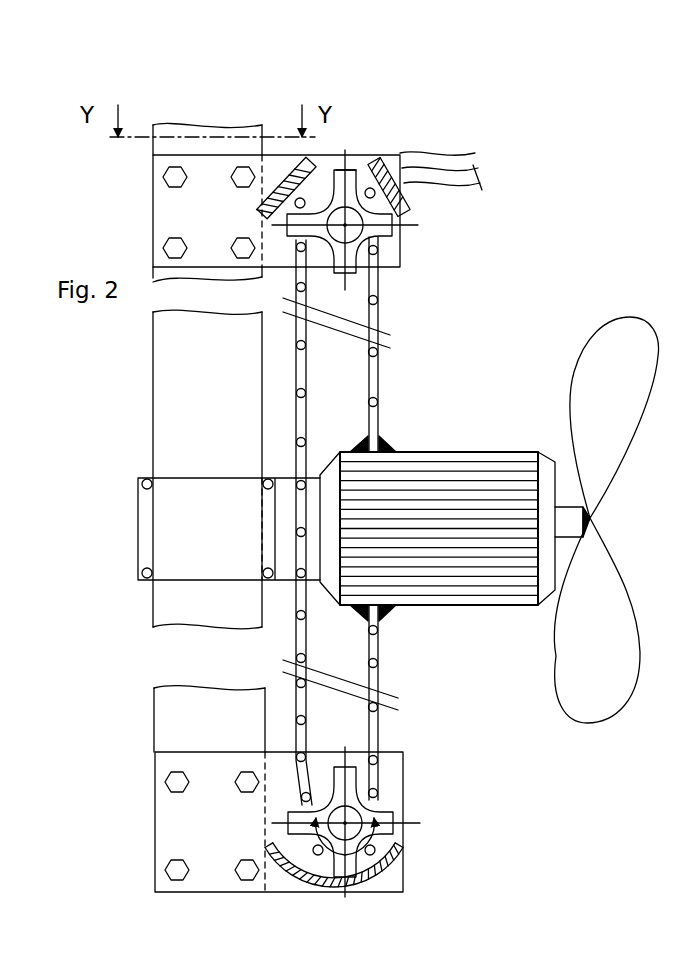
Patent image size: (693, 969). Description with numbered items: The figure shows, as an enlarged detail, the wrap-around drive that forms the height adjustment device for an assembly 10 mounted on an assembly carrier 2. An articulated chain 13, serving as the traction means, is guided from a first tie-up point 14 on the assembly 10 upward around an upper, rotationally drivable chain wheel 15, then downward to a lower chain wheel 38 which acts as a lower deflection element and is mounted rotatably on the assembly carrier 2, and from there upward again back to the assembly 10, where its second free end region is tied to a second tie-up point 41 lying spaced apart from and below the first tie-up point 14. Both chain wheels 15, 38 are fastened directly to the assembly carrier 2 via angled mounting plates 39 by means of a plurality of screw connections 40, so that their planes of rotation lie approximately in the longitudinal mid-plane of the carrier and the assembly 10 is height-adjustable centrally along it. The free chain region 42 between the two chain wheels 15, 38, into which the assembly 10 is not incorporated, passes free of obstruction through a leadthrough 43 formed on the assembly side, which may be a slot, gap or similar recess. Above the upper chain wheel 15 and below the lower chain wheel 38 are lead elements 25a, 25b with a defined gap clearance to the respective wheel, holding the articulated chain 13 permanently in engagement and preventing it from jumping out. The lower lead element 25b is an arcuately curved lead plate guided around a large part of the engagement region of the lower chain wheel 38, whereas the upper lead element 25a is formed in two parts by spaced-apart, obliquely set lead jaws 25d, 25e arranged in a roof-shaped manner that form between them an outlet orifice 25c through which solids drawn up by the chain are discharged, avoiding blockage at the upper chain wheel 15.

The assembly carrier 2 is at (182, 398).
The assembly 10 is at (456, 452).
The articulated chain 13 is at (372, 372).
The first tie-up point 14 is at (390, 450).
The chain wheel 15 is at (377, 235).
The upper lead element 25a is at (444, 153).
The lower lead element 25b is at (402, 862).
The outlet orifice 25c is at (347, 166).
The lead jaw 25d is at (284, 180).
The lead jaw 25e is at (390, 170).
The lower chain wheel 38 is at (392, 806).
The mounting plates 39 is at (390, 265).
The screw connections 40 is at (166, 178).
The second tie-up point 41 is at (382, 607).
The free chain region 42 is at (294, 415).
The leadthrough 43 is at (285, 483).